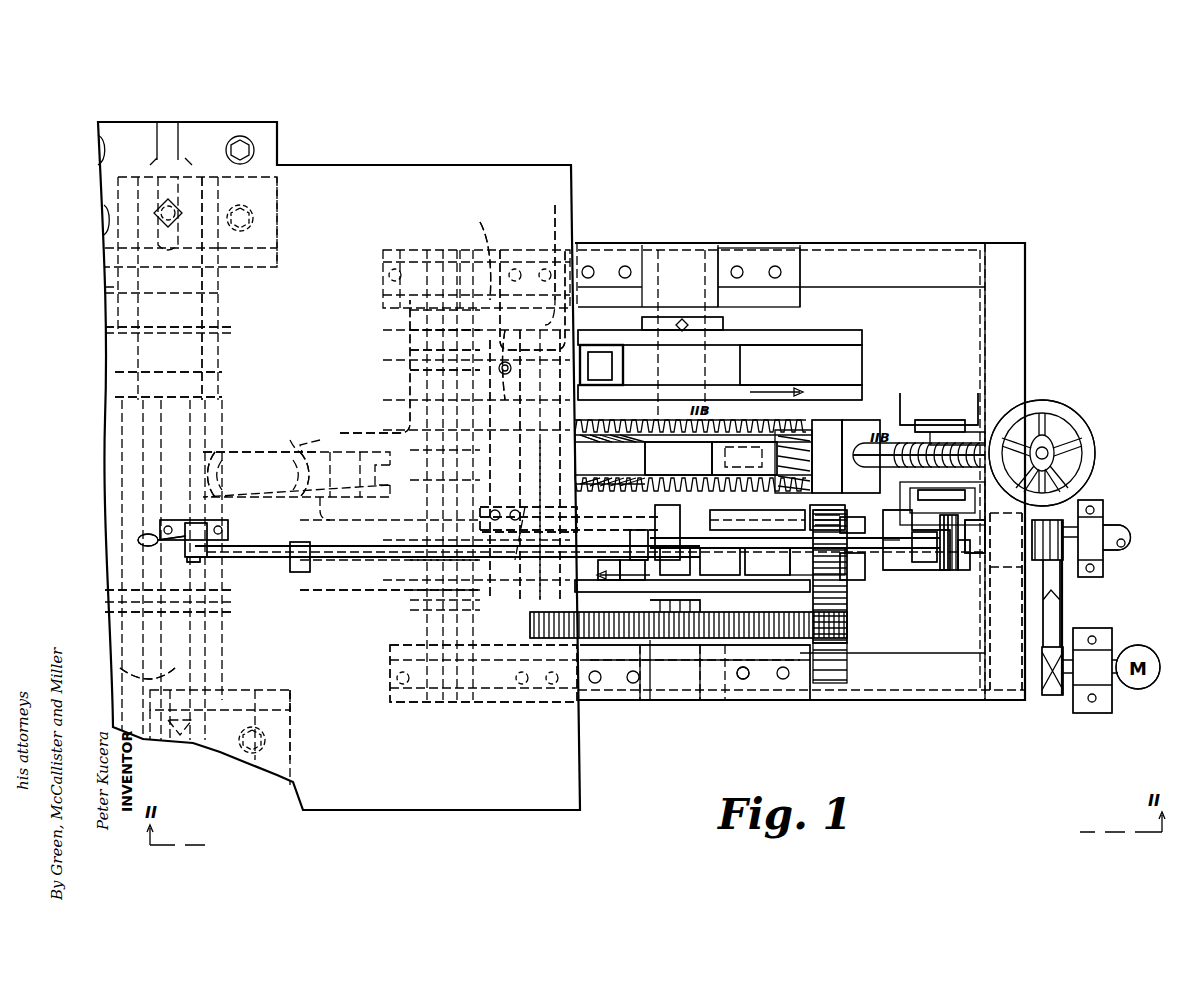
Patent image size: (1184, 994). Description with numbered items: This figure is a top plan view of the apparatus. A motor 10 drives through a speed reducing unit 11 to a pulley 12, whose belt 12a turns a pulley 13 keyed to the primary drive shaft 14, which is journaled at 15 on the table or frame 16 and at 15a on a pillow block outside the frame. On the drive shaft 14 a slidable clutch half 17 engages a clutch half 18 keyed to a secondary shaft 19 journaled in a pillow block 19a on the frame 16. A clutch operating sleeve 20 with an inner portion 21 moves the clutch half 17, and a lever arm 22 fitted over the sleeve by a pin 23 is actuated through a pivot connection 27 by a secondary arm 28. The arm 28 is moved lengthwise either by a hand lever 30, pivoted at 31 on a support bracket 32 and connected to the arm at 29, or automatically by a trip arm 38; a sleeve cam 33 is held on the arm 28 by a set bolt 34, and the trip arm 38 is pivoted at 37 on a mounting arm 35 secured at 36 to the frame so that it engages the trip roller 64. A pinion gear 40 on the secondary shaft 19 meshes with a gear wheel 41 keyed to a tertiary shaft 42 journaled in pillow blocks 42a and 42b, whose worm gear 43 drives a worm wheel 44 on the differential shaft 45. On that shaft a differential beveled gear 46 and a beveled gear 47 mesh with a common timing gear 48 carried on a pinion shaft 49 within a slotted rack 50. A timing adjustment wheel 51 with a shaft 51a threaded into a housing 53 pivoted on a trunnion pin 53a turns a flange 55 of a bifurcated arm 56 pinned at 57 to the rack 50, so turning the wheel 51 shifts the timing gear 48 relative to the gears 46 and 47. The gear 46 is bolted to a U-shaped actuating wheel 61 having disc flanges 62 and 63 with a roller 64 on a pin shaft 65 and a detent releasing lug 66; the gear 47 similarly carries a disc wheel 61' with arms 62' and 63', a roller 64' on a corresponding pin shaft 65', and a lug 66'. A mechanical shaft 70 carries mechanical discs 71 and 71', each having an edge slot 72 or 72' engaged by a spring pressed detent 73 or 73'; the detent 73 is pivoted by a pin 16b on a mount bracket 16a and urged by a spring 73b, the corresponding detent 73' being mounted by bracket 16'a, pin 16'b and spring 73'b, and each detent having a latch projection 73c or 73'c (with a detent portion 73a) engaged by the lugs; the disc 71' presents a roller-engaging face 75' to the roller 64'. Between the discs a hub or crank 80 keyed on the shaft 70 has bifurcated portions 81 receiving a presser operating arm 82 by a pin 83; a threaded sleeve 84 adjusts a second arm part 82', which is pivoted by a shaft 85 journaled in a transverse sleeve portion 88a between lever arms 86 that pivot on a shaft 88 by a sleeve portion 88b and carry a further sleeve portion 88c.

The motor 10 is at (1146, 689).
The speed reducing unit 11 is at (1092, 713).
The pulley 12 is at (1042, 690).
The belt 12a is at (1063, 612).
The pulley 13 is at (1063, 590).
The primary drive shaft 14 is at (1128, 540).
The journal 15 is at (1005, 580).
The pillow block journal 15a is at (1100, 518).
The table or frame 16 is at (617, 468).
The mount bracket 16a is at (410, 590).
The pivot pin 16b is at (410, 608).
The frame member 16'a is at (406, 330).
The frame member 16'b is at (406, 352).
The clutch half 17 is at (925, 570).
The clutch half 18 is at (900, 570).
The secondary shaft 19 is at (890, 570).
The pillow block 19a is at (770, 522).
The clutch operating sleeve 20 is at (970, 570).
The inner portion of sleeve 21 is at (946, 572).
The lever arm 22 is at (915, 552).
The pin 23 is at (968, 512).
The pivot connection 27 is at (965, 538).
The secondary arm 28 is at (270, 545).
The pivot connection 29 is at (200, 560).
The hand lever 30 is at (188, 545).
The pivot 31 is at (212, 520).
The support bracket 32 is at (195, 525).
The sleeve cam 33 is at (640, 530).
The set bolt 34 is at (642, 572).
The mounting arm 35 is at (625, 517).
The securing point 36 is at (495, 510).
The pivot 37 is at (680, 562).
The trip arm 38 is at (690, 510).
The pinion gear 40 is at (825, 500).
The gear wheel 41 is at (850, 645).
The tertiary shaft 42 is at (630, 720).
The pillow block 42a is at (755, 678).
The pillow block 42b is at (625, 700).
The worm gear 43 is at (690, 700).
The worm wheel 44 is at (738, 712).
The differential shaft 45 is at (655, 700).
The differential beveled gear 46 is at (615, 480).
The beveled gear 47 is at (610, 452).
The timing gear 48 is at (725, 450).
The pinion shaft 49 is at (745, 466).
The rack 50 is at (645, 462).
The timing adjustment wheel 51 is at (1080, 418).
The shaft 51a is at (860, 470).
The threaded housing 53 is at (928, 430).
The trunnion pin 53a is at (950, 500).
The flange 55 is at (866, 412).
The connecting bifurcated arm 56 is at (790, 510).
The pin 57 is at (825, 420).
The rotating actuating wheel 61 is at (767, 561).
The disc wheel 61' is at (801, 365).
The disc flange 62 is at (855, 571).
The disc-like arm 62' is at (724, 375).
The disc flange 63 is at (855, 508).
The disc-like arm 63' is at (722, 322).
The roller 64 is at (720, 561).
The operating roller 64' is at (600, 366).
The pin shaft 65 is at (649, 585).
The gear rack 65' is at (690, 410).
The detent releasing lug 66 is at (692, 594).
The detent releasing lug 66' is at (528, 285).
The mechanical shaft 70 is at (495, 680).
The mechanical disc 71 is at (390, 607).
The second mechanical disc 71' is at (507, 365).
The slot 72 is at (306, 576).
The block 72' is at (520, 380).
The detent 73 is at (529, 478).
The second detent 73' is at (508, 398).
The rod part 73a is at (525, 497).
The spring 73b is at (550, 600).
The rod part 73'b is at (512, 465).
The rod part 73c is at (598, 594).
The latch projection 73'c is at (543, 244).
The plate 75' is at (657, 325).
The hub or crank 80 is at (362, 433).
The bifurcated portions 81 is at (335, 520).
The presser operating arm 82 is at (324, 457).
The second arm part 82' is at (187, 458).
The pin 83 is at (298, 440).
The threaded sleeve 84 is at (250, 450).
The shaft 85 is at (222, 372).
The lever arms 86 is at (240, 612).
The shaft 88 is at (203, 293).
The transverse sleeve portion 88a is at (218, 400).
The transverse sleeve portion 88b is at (230, 585).
The transverse sleeve portion 88c is at (158, 668).